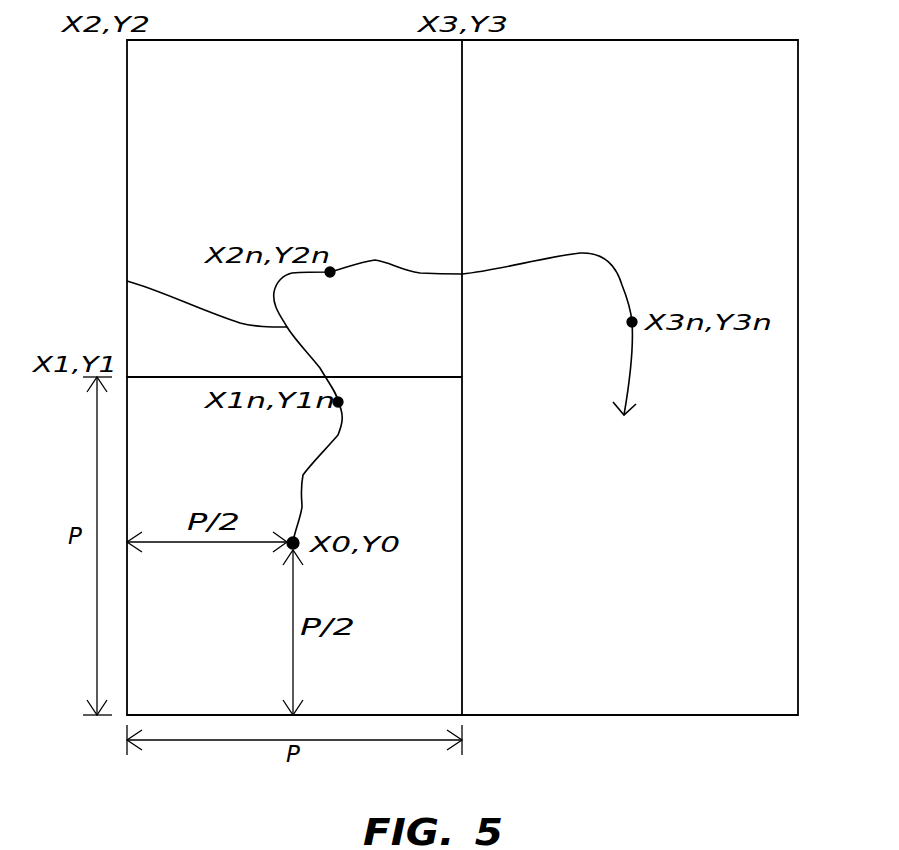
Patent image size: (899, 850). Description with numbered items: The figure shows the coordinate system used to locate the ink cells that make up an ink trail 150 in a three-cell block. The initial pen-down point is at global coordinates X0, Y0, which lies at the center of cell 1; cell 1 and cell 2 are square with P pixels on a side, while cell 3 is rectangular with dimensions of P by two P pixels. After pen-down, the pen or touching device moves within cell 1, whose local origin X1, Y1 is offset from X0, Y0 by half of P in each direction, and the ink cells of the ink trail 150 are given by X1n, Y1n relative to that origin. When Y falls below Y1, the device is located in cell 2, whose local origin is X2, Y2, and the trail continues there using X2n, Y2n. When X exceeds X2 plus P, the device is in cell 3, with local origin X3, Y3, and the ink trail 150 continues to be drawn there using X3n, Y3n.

The ink trail 150 is at (127, 281).
The cell 1 is at (294, 546).
The cell 2 is at (294, 208).
The cell 3 is at (630, 377).